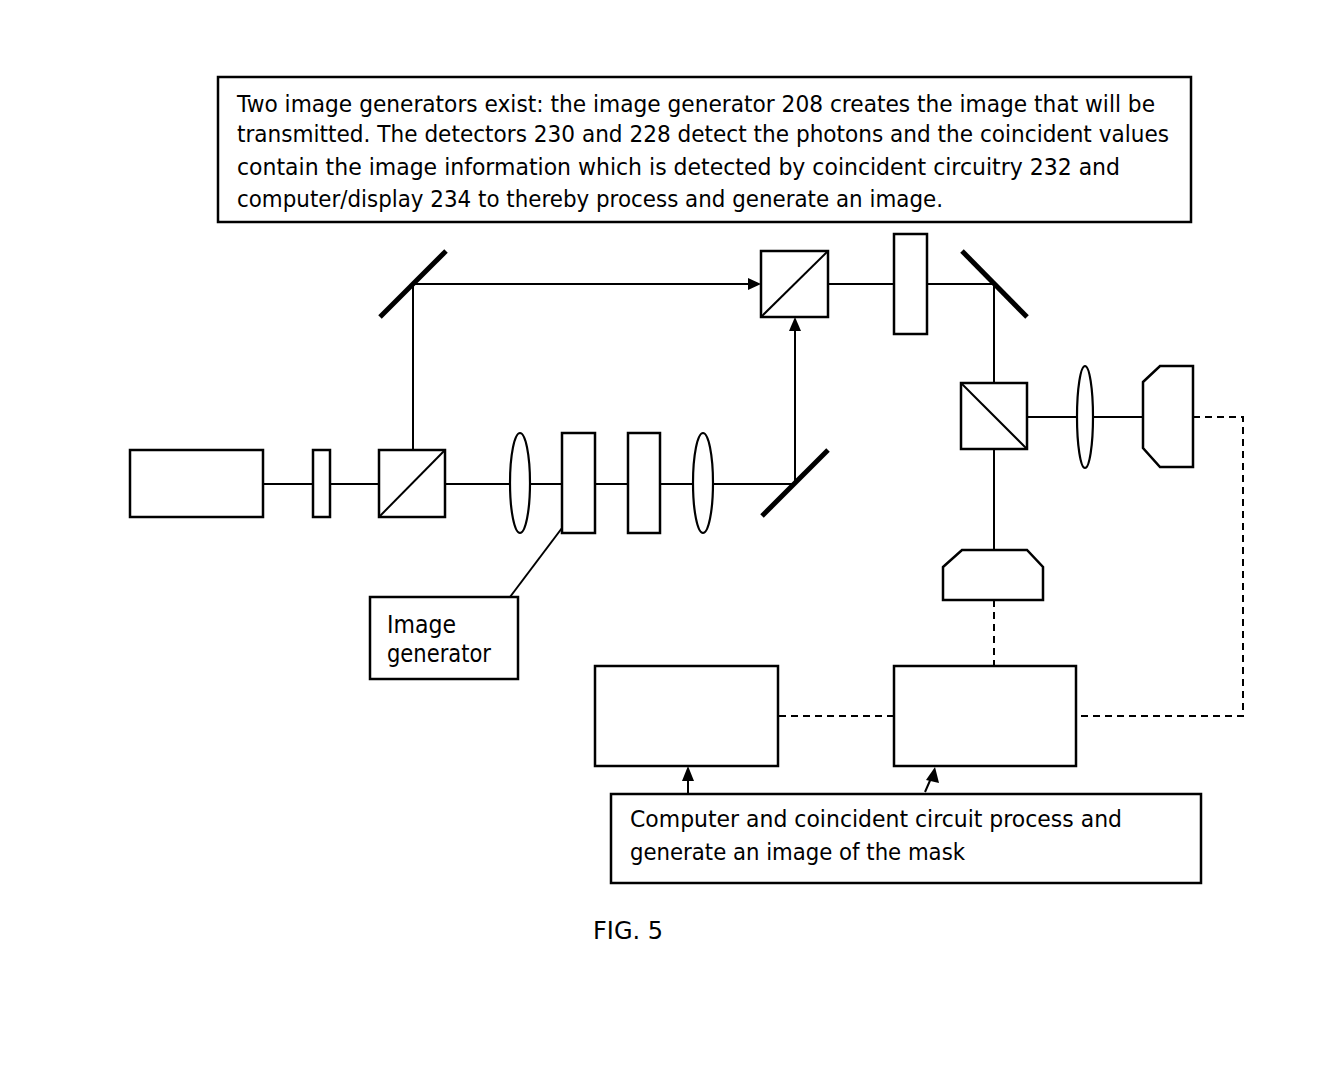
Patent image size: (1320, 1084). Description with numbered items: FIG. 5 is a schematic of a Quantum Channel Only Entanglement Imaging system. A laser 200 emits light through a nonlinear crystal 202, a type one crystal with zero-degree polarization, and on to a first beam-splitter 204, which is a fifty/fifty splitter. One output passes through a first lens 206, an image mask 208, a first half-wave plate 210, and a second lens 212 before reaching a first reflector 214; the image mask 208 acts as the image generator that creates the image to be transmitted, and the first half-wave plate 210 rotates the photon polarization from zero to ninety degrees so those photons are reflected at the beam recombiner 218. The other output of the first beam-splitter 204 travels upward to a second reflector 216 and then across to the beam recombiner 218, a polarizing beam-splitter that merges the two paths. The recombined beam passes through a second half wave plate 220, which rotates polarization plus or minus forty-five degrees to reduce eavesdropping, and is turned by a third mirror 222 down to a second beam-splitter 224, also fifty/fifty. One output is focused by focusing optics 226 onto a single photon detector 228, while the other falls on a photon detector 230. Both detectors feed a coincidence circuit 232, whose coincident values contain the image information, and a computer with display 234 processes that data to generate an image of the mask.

The laser 200 is at (225, 495).
The nonlinear crystal 202 is at (322, 493).
The first beam-splitter 204 is at (410, 498).
The first lens 206 is at (518, 515).
The image mask 208 is at (587, 528).
The first half-wave plate 210 is at (647, 440).
The second lens 212 is at (702, 515).
The first reflector 214 is at (785, 503).
The second reflector 216 is at (390, 302).
The beam recombiner 218 is at (778, 283).
The second half wave plate 220 is at (917, 317).
The third mirror 222 is at (980, 268).
The second beam-splitter 224 is at (970, 422).
The focusing optics 226 is at (1088, 393).
The single photon detector 228 is at (1177, 403).
The photon detector 230 is at (1027, 565).
The coincidence circuit 232 is at (1063, 747).
The computer with display 234 is at (617, 747).